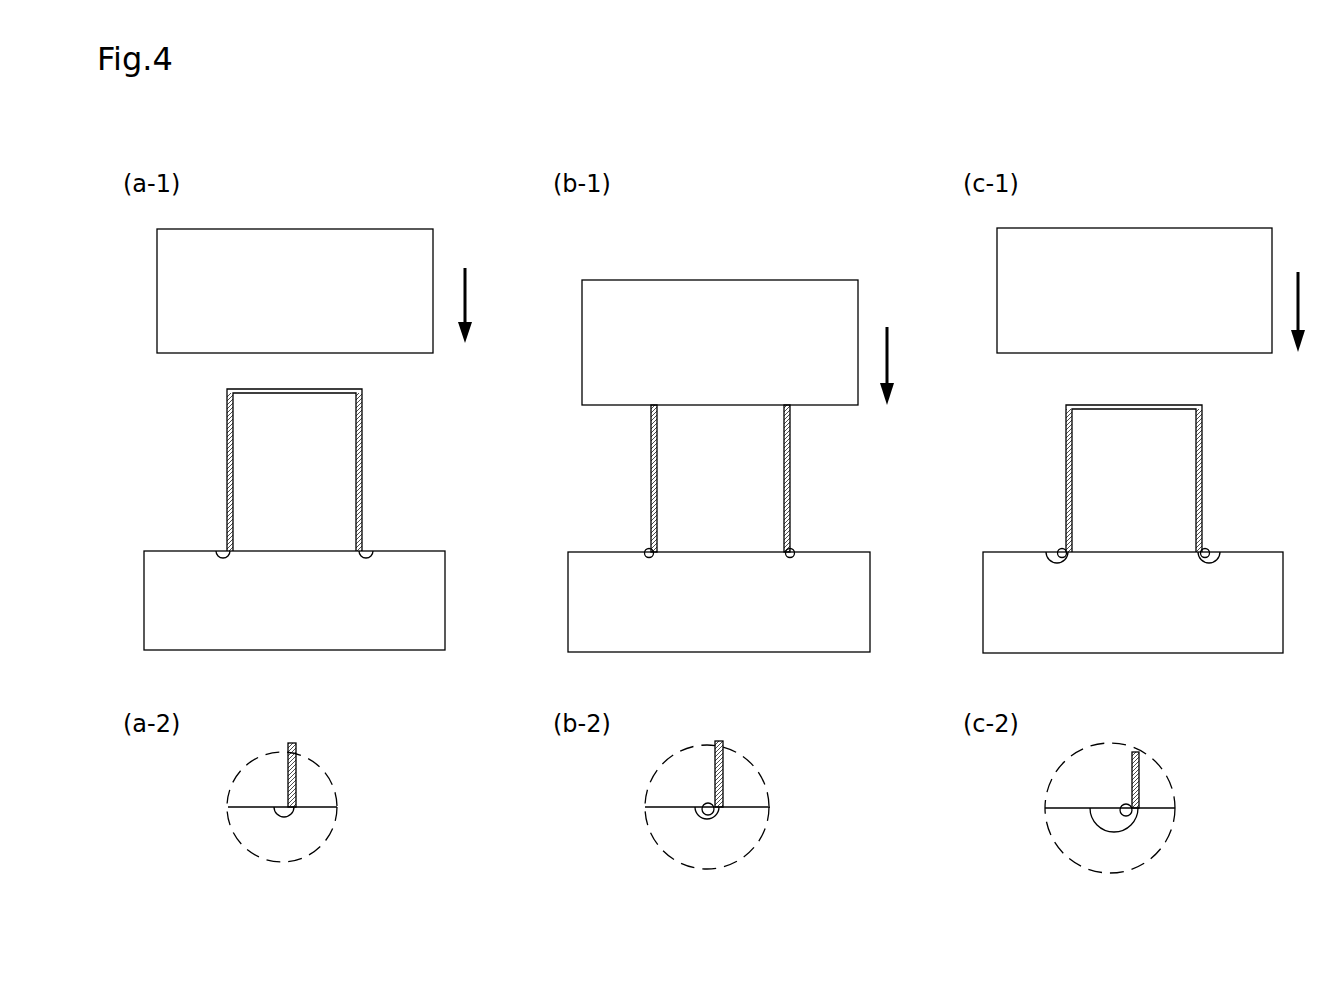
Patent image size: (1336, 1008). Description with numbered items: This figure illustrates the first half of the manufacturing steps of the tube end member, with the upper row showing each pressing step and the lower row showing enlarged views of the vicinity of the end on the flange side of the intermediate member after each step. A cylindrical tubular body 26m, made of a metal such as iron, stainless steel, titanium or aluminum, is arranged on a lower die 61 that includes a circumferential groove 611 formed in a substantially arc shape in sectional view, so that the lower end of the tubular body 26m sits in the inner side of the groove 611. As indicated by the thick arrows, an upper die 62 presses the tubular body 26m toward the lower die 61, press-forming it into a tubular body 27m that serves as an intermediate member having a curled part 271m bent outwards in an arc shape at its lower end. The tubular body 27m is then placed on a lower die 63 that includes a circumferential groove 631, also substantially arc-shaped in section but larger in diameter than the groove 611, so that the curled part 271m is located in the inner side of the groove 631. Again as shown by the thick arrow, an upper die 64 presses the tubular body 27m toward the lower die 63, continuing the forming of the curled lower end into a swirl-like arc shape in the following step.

The upper die 62 is at (341, 244).
The upper die 64 is at (1173, 242).
The tubular body 26m is at (227, 465).
The tubular body 27m is at (651, 459).
The lower die 61 is at (181, 560).
The circumferential groove 611 is at (366, 549).
The curled part 271m is at (790, 549).
The lower die 63 is at (1003, 562).
The circumferential groove 631 is at (1058, 549).